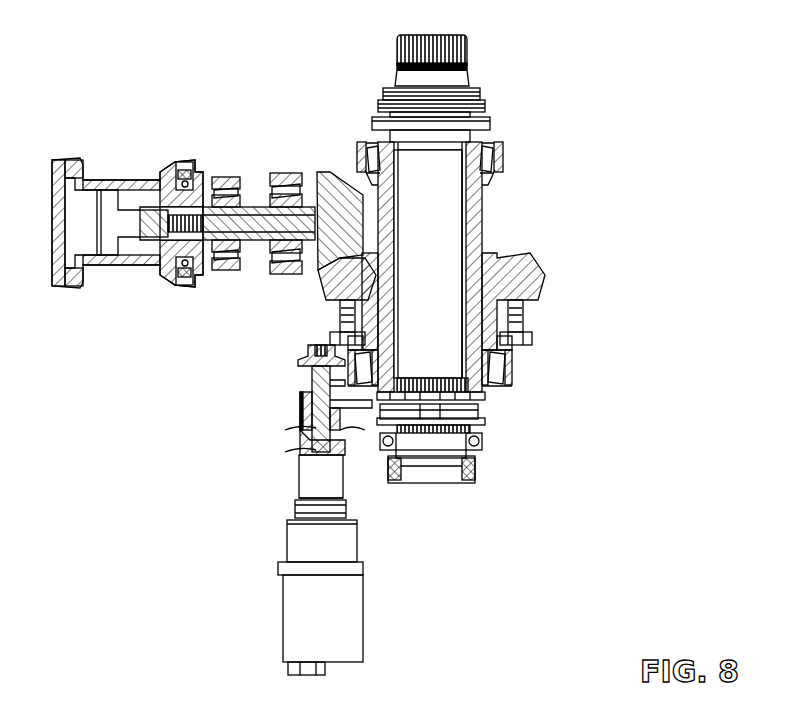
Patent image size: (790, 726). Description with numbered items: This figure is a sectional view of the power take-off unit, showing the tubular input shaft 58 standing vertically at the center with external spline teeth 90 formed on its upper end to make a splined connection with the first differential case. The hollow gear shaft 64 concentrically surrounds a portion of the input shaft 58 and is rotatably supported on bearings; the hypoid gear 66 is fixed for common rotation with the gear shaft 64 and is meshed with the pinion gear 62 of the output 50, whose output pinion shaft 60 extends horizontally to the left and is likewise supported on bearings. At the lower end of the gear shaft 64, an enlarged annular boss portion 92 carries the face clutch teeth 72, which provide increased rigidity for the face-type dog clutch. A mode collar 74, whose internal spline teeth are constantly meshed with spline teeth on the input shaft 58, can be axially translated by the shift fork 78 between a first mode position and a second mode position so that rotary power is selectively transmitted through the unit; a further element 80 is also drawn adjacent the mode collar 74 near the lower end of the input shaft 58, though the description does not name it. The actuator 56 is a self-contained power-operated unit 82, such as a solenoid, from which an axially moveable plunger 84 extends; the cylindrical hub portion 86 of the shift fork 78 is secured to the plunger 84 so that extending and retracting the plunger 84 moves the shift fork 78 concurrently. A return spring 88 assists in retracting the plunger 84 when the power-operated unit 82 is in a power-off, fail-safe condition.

The output 50 is at (140, 172).
The actuator 56 is at (372, 617).
The input shaft 58 is at (460, 80).
The output pinion shaft 60 is at (255, 232).
The pinion gear 62 is at (338, 196).
The gear shaft 64 is at (482, 185).
The hypoid gear 66 is at (536, 268).
The face clutch teeth 72 is at (487, 378).
The mode collar 74 is at (486, 420).
The shift fork 78 is at (431, 412).
The splined gear 80 is at (487, 396).
The power-operated unit 82 is at (292, 596).
The plunger 84 is at (322, 408).
The cylindrical hub portion 86 is at (306, 421).
The return spring 88 is at (316, 352).
The external spline teeth 90 is at (408, 52).
The enlarged annular boss portion 92 is at (504, 372).